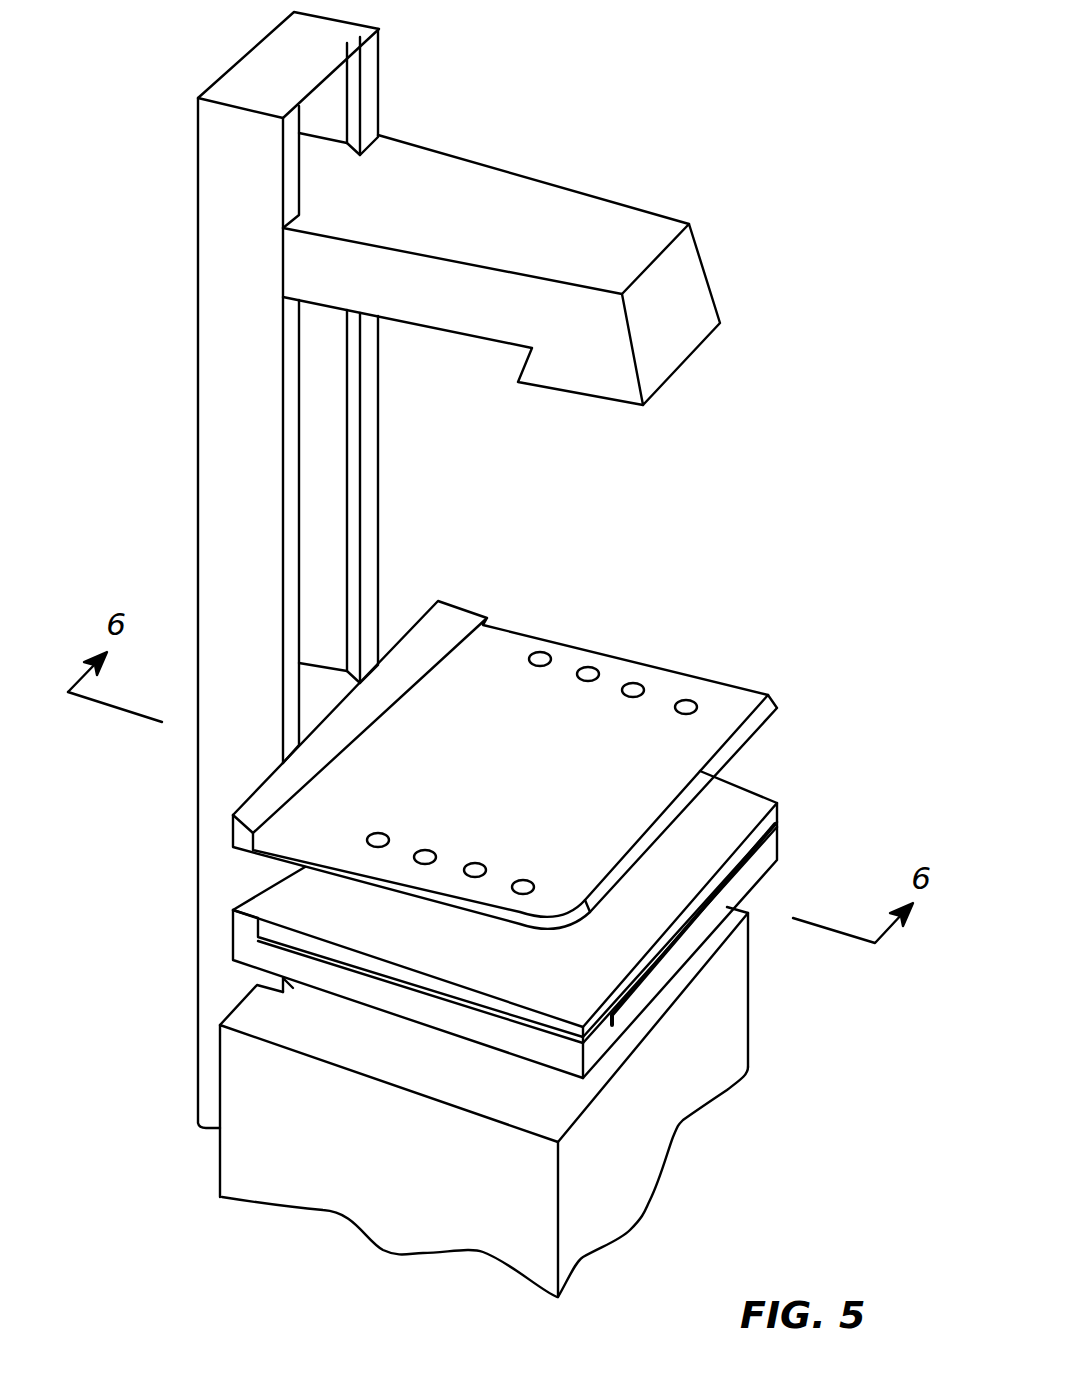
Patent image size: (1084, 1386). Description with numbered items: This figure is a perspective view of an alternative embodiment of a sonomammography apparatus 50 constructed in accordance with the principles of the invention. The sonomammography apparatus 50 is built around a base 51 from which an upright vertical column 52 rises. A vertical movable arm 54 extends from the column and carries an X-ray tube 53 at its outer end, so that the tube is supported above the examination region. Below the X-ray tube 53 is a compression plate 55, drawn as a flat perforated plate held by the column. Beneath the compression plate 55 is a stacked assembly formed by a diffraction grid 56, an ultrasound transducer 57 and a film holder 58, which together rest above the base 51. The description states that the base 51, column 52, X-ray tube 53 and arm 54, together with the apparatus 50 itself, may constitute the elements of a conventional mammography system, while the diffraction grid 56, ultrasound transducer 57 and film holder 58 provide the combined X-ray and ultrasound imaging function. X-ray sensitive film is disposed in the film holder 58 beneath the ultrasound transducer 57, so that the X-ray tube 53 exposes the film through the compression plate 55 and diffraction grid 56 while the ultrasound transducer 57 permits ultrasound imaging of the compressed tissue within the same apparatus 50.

The sonomammography apparatus 50 is at (732, 577).
The base 51 is at (388, 1170).
The upright vertical column 52 is at (217, 485).
The X-ray tube 53 is at (682, 290).
The vertical movable arm 54 is at (498, 195).
The compression plate 55 is at (452, 720).
The diffraction grid 56 is at (652, 885).
The ultrasound transducer 57 is at (778, 815).
The film holder 58 is at (410, 1005).